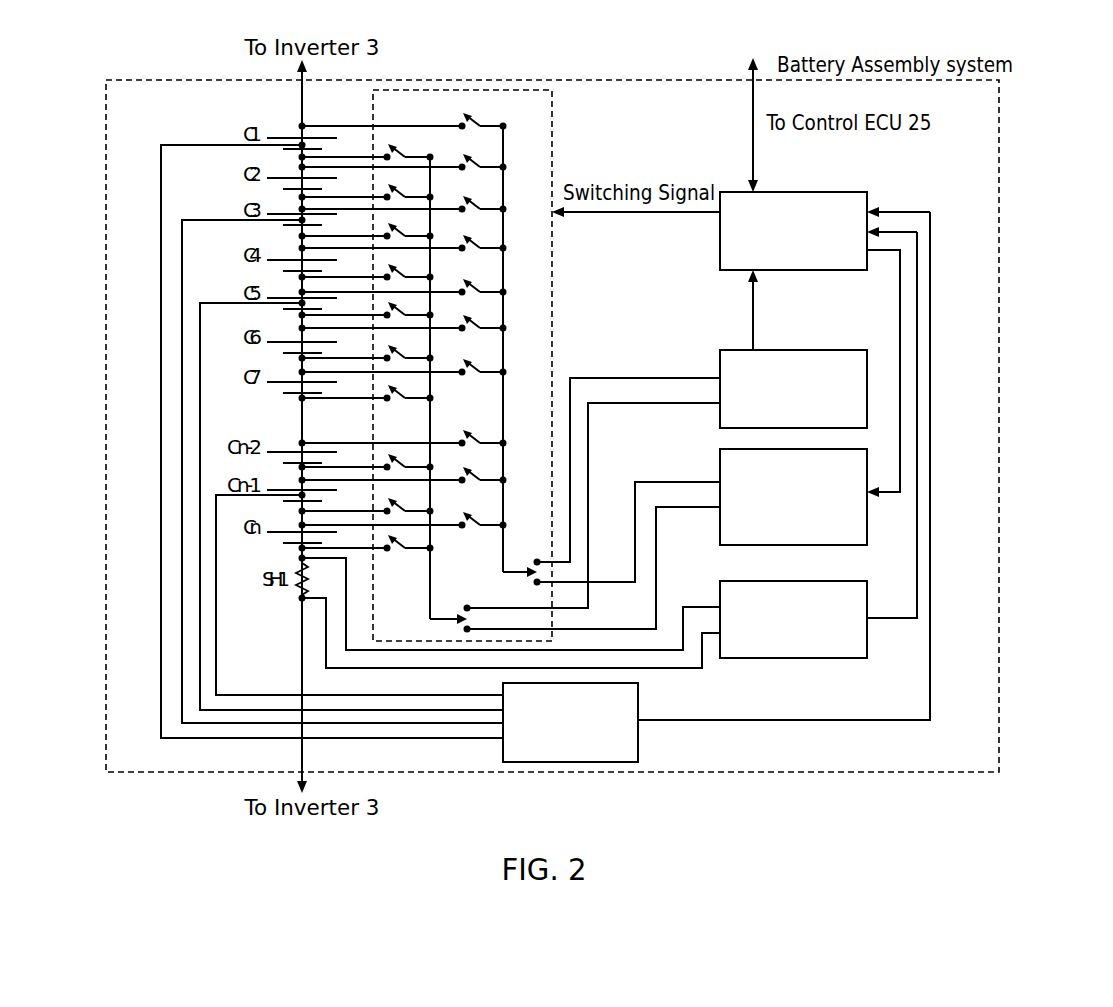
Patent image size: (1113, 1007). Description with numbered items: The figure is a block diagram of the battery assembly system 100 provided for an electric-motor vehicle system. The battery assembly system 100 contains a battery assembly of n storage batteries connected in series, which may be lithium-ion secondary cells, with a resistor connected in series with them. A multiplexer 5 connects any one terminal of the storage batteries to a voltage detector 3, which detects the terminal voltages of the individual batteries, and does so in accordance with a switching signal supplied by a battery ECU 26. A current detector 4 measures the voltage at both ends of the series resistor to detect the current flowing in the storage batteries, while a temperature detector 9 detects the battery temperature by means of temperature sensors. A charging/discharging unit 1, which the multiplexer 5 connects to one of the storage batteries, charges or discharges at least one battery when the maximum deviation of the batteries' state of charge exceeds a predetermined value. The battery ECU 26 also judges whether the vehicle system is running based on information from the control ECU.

The battery assembly system 100 is at (1033, 115).
The multiplexer 5 is at (524, 90).
The battery ECU 26 is at (836, 192).
The voltage detector 3 is at (836, 350).
The charging/discharging unit 1 is at (867, 525).
The current detector 4 is at (850, 658).
The temperature detector 9 is at (638, 738).